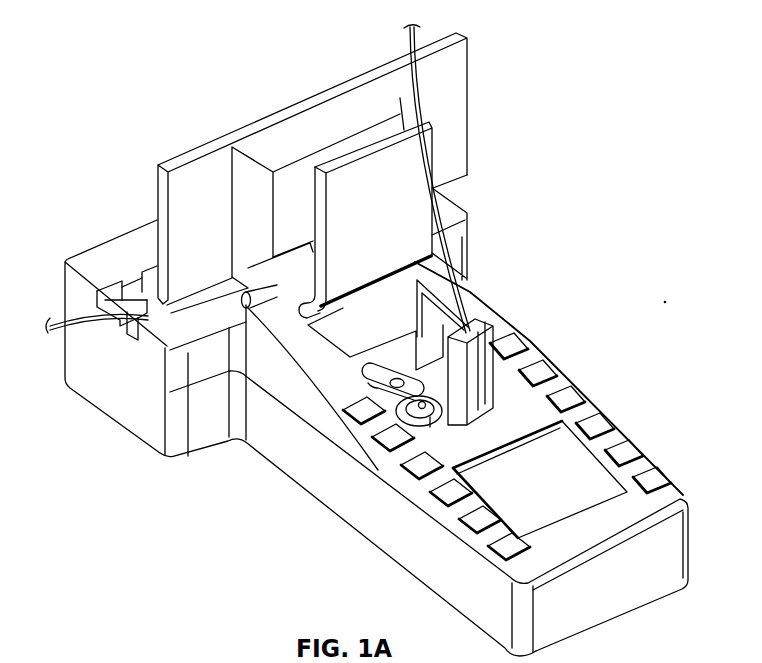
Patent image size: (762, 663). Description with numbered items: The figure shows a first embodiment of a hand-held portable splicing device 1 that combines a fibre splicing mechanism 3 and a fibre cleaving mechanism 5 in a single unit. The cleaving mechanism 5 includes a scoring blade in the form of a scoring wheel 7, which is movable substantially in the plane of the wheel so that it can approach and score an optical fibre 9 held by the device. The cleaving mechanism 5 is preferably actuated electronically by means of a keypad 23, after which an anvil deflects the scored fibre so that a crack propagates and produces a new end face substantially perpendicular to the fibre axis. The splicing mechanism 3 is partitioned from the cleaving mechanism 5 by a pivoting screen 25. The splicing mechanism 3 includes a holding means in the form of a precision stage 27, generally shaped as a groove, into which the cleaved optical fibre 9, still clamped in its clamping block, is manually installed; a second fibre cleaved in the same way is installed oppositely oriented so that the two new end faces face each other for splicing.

The hand-held portable splicing device 1 is at (115, 98).
The fibre splicing mechanism 3 is at (138, 208).
The fibre cleaving mechanism 5 is at (535, 322).
The scoring wheel 7 is at (397, 376).
The optical fibre 9 is at (406, 44).
The keypad 23 is at (598, 432).
The pivoting screen 25 is at (465, 93).
The precision stage 27 is at (129, 349).